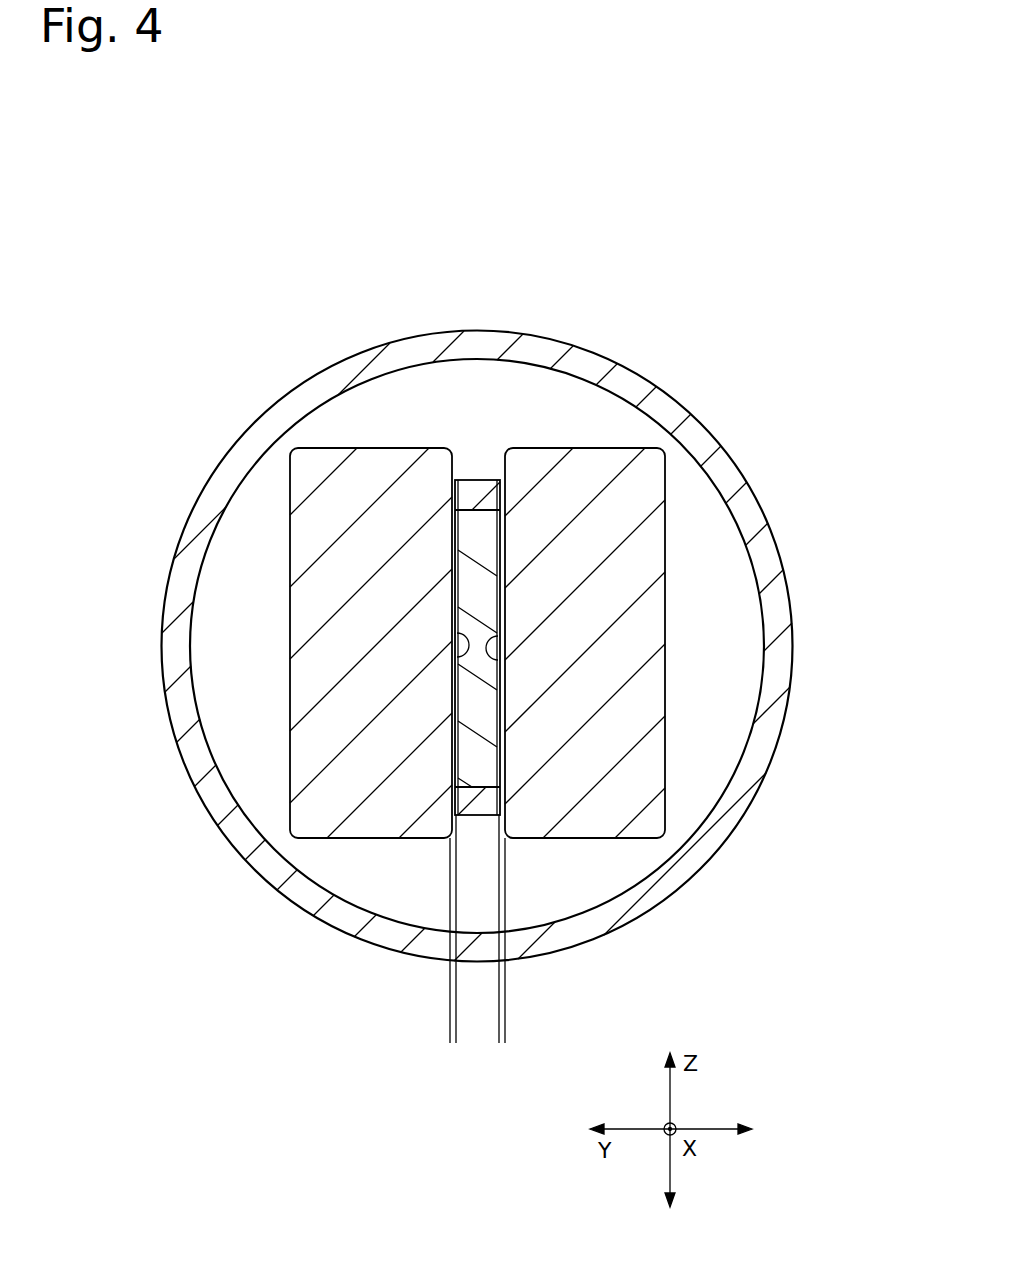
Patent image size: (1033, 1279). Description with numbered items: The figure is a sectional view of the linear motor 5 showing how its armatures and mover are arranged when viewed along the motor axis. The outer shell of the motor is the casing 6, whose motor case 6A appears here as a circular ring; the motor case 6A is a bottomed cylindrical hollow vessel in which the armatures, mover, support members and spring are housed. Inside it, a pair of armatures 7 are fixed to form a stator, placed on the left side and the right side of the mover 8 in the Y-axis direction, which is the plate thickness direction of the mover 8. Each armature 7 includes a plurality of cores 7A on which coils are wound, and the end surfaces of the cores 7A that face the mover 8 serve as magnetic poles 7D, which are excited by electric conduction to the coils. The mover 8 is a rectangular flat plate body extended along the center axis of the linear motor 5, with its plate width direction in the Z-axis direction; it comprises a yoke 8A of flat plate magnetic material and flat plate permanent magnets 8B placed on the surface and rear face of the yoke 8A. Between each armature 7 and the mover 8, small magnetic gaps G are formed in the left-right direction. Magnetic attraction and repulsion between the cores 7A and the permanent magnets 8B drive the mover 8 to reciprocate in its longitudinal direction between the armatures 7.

The linear motor 5 is at (541, 312).
The casing 6 is at (283, 388).
The motor case 6A is at (660, 407).
The armature 7 is at (293, 542).
The core 7A is at (327, 752).
The magnetic pole 7D is at (452, 648).
The mover 8 is at (472, 480).
The yoke 8A is at (475, 803).
The permanent magnet 8B is at (482, 755).
The magnetic gap G is at (475, 1030).